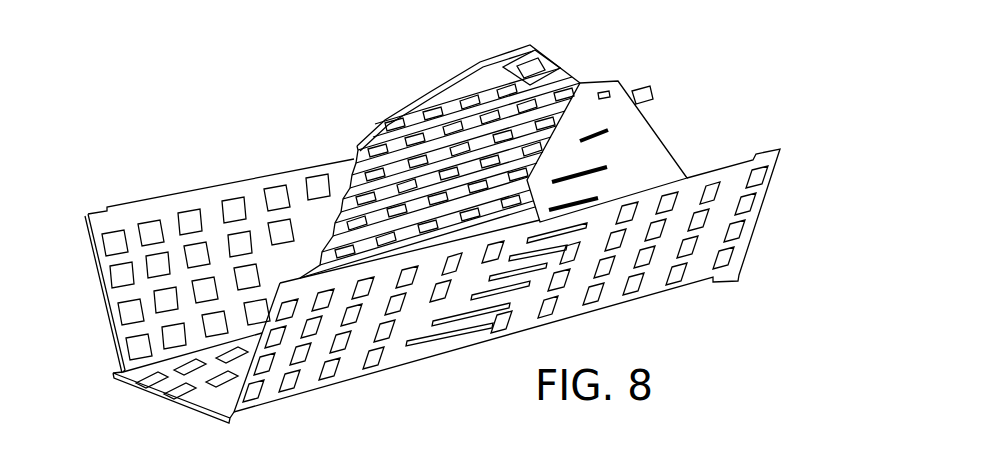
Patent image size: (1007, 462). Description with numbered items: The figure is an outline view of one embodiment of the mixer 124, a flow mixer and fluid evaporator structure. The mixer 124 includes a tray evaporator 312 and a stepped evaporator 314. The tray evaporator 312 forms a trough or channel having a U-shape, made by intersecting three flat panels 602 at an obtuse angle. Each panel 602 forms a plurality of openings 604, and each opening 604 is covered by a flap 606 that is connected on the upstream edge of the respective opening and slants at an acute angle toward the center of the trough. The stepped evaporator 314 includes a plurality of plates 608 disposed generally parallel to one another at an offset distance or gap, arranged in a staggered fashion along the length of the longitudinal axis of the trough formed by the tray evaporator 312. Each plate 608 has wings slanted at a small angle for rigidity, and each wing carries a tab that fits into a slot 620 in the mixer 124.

The mixer 124 is at (290, 87).
The tray evaporator 312 is at (253, 192).
The stepped evaporator 314 is at (643, 140).
The flat panel 602 is at (118, 334).
The opening 604 is at (376, 360).
The flap 606 is at (192, 222).
The plate 608 is at (400, 165).
The slot 620 is at (597, 131).